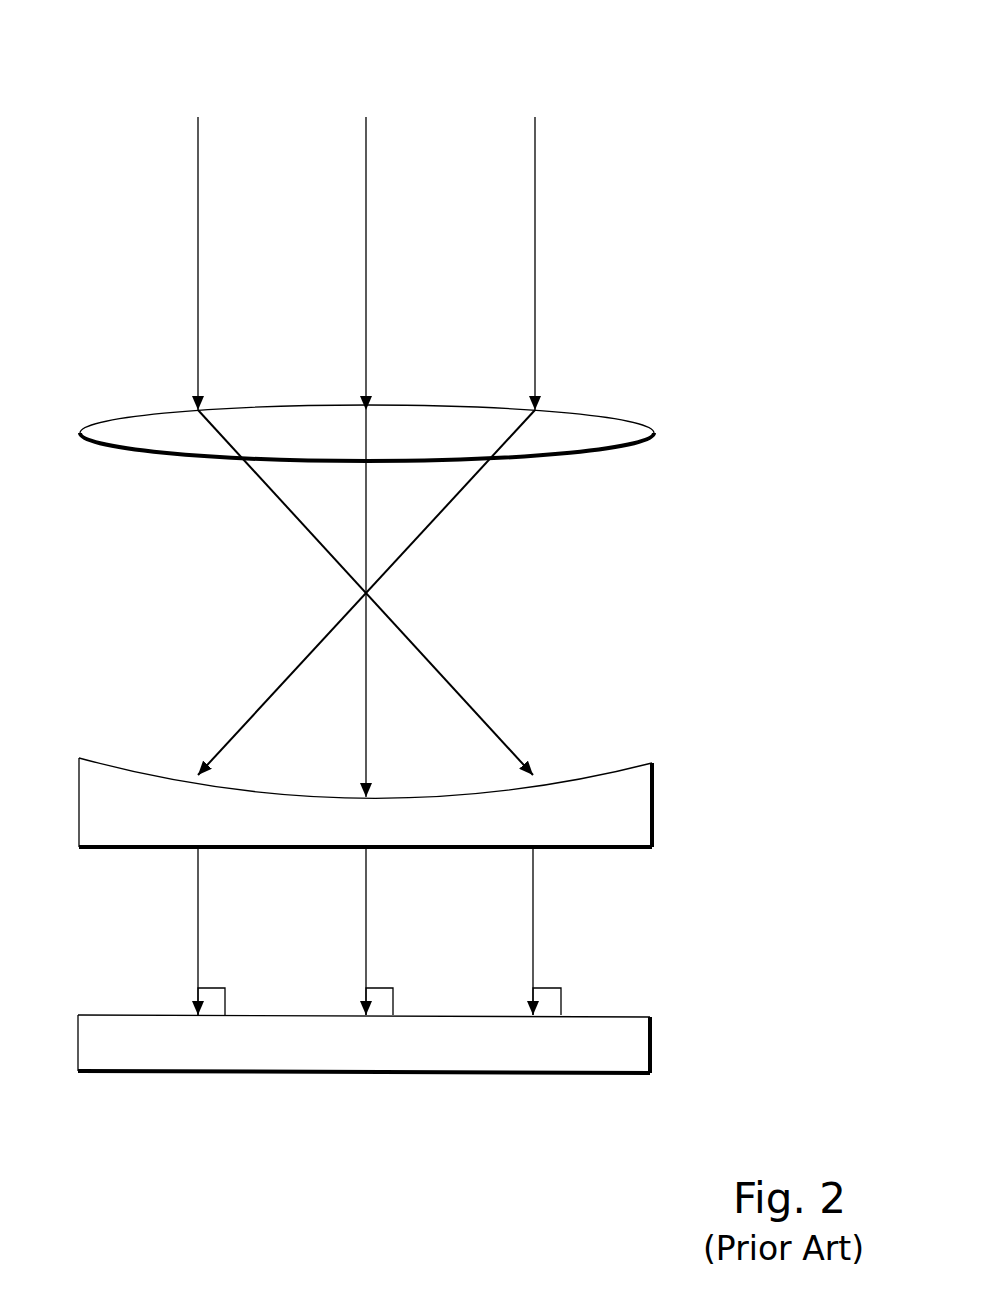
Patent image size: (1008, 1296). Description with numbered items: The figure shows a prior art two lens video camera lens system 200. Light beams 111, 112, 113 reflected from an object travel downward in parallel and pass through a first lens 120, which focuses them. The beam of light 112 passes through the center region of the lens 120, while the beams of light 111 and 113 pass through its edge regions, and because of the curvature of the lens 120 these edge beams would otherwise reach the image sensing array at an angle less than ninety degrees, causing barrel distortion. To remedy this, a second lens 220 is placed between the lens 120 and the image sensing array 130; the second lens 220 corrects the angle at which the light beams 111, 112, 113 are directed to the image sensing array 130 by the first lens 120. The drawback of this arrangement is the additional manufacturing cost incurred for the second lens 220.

The two lens video camera lens system 200 is at (753, 31).
The light beam 111 is at (198, 245).
The light beam 112 is at (366, 245).
The light beam 113 is at (535, 245).
The lens 120 is at (656, 440).
The second lens 220 is at (654, 808).
The image sensing array 130 is at (652, 1057).